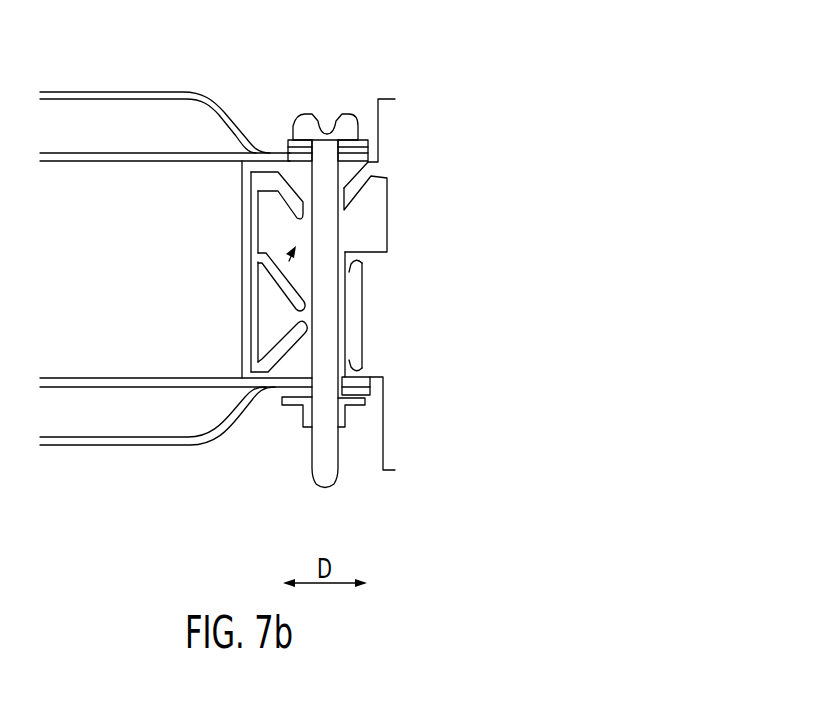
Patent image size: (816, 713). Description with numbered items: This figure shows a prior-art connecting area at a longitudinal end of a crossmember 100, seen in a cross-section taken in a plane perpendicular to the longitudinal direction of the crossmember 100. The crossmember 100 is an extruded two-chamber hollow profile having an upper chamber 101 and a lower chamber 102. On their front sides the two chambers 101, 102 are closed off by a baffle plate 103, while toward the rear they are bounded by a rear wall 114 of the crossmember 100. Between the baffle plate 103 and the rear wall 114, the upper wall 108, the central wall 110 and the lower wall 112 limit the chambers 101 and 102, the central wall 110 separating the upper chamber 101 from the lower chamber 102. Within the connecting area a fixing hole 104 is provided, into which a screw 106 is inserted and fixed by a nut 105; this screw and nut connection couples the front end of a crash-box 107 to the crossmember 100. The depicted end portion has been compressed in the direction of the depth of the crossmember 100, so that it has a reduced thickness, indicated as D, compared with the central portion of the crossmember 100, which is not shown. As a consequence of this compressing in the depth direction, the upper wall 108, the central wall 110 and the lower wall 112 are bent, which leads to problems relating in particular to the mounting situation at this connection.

The crossmember 100 is at (417, 61).
The upper chamber 101 is at (380, 215).
The lower chamber 102 is at (352, 308).
The baffle plate 103 is at (392, 278).
The fixing hole 104 is at (289, 263).
The nut 105 is at (366, 403).
The screw 106 is at (328, 182).
The crash-box 107 is at (146, 447).
The upper wall 108 is at (283, 193).
The central wall 110 is at (278, 280).
The lower wall 112 is at (300, 340).
The rear wall 114 is at (242, 238).